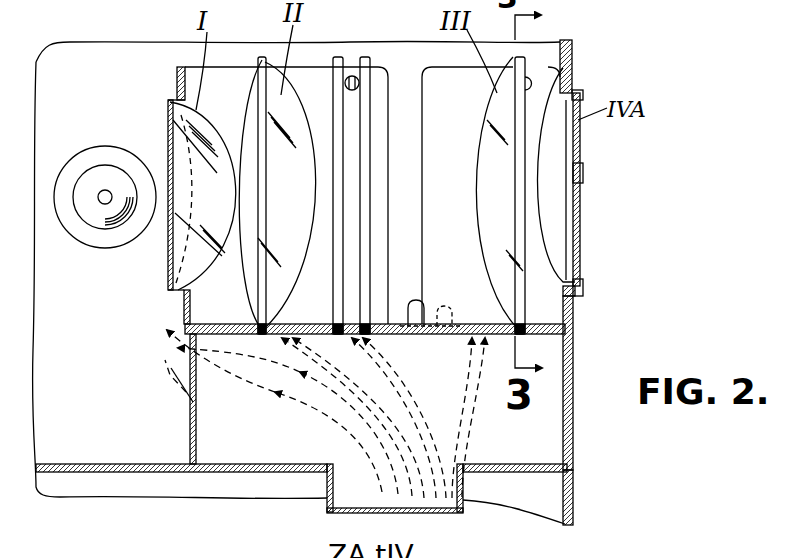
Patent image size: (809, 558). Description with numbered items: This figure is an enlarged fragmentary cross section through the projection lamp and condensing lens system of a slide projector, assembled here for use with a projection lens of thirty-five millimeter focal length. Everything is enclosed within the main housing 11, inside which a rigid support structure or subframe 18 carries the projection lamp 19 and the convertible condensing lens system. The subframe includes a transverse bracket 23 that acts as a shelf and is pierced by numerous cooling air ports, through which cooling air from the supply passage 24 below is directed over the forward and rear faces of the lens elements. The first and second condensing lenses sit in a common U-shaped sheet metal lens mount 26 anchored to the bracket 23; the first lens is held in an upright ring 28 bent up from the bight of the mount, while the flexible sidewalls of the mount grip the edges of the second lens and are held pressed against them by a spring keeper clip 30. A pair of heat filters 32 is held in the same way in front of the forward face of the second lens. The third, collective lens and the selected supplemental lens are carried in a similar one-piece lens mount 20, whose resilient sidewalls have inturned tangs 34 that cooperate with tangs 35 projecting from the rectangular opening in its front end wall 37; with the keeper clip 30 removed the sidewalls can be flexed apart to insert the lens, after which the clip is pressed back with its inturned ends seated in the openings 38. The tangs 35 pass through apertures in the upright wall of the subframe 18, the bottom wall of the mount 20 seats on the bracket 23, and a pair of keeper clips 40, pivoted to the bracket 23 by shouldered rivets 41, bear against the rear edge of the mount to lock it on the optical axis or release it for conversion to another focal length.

The main housing 11 is at (580, 488).
The support structure 18 is at (576, 374).
The projection lamp 19 is at (101, 219).
The lens mount 20 is at (438, 64).
The transverse bracket 23 is at (318, 336).
The supply passage 24 is at (446, 498).
The lens mount 26 is at (197, 326).
The upright ring 28 is at (167, 100).
The spring keeper clip 30 is at (263, 57).
The heat filter 32 is at (358, 143).
The inturned tang 34 is at (573, 50).
The tang 35 is at (580, 97).
The front end wall 37 is at (576, 311).
The opening 38 is at (518, 92).
The keeper clip 40 is at (415, 305).
The shouldered rivet 41 is at (441, 318).